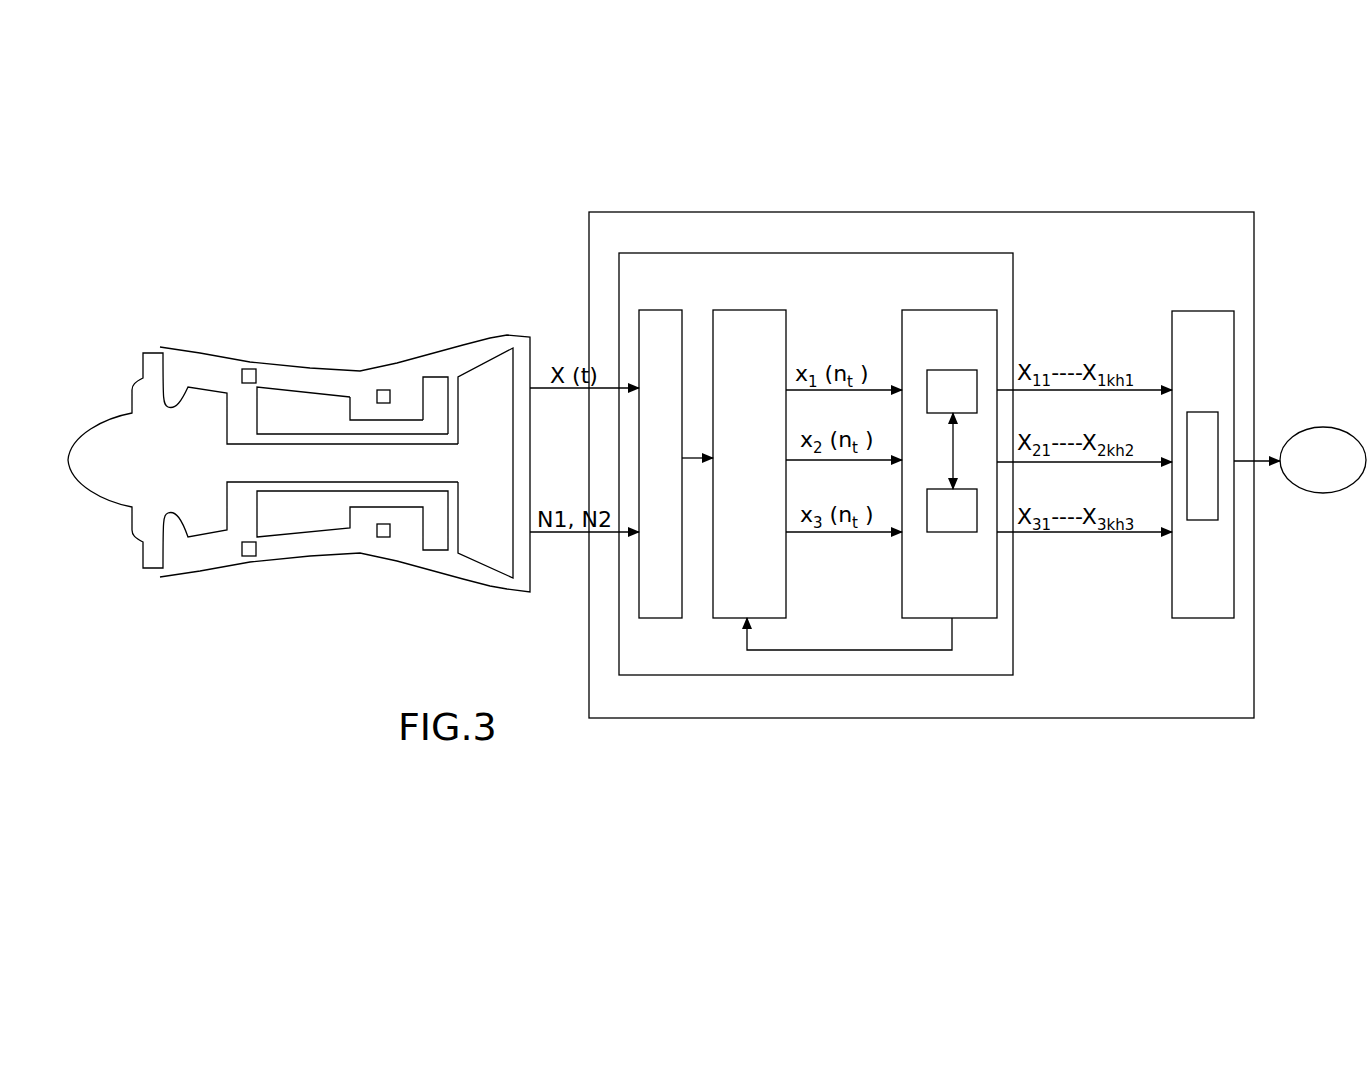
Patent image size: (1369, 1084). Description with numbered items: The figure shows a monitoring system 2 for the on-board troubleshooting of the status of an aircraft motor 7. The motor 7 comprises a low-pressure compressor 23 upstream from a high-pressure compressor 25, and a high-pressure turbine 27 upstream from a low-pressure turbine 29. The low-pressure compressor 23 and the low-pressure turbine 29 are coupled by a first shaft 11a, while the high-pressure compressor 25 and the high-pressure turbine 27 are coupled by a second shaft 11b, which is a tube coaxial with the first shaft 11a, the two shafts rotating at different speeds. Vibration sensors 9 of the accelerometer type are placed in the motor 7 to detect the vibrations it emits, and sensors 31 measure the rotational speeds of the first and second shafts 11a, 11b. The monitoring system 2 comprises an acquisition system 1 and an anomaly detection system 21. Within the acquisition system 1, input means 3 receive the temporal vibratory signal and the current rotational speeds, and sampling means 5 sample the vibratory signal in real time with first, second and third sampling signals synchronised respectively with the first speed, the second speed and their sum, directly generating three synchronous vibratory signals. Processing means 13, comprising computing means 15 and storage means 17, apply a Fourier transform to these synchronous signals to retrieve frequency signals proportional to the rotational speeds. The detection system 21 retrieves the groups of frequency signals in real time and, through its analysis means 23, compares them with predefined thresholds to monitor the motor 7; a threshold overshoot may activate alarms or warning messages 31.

The acquisition system 1 is at (985, 677).
The monitoring system 2 is at (933, 740).
The input means 3 is at (648, 310).
The sampling means 5 is at (730, 310).
The motor 7 is at (327, 566).
The vibration sensor 9 is at (383, 389).
The first shaft 11a is at (240, 481).
The second shaft 11b is at (358, 419).
The processing means 13 is at (918, 310).
The computing means 15 is at (933, 370).
The storage means 17 is at (938, 533).
The anomaly detection system 21 is at (1182, 619).
The low-pressure compressor 23 is at (200, 385).
The high-pressure compressor 25 is at (284, 386).
The high-pressure turbine 27 is at (430, 376).
The low-pressure turbine 29 is at (487, 356).
The sensors 31 is at (247, 368).